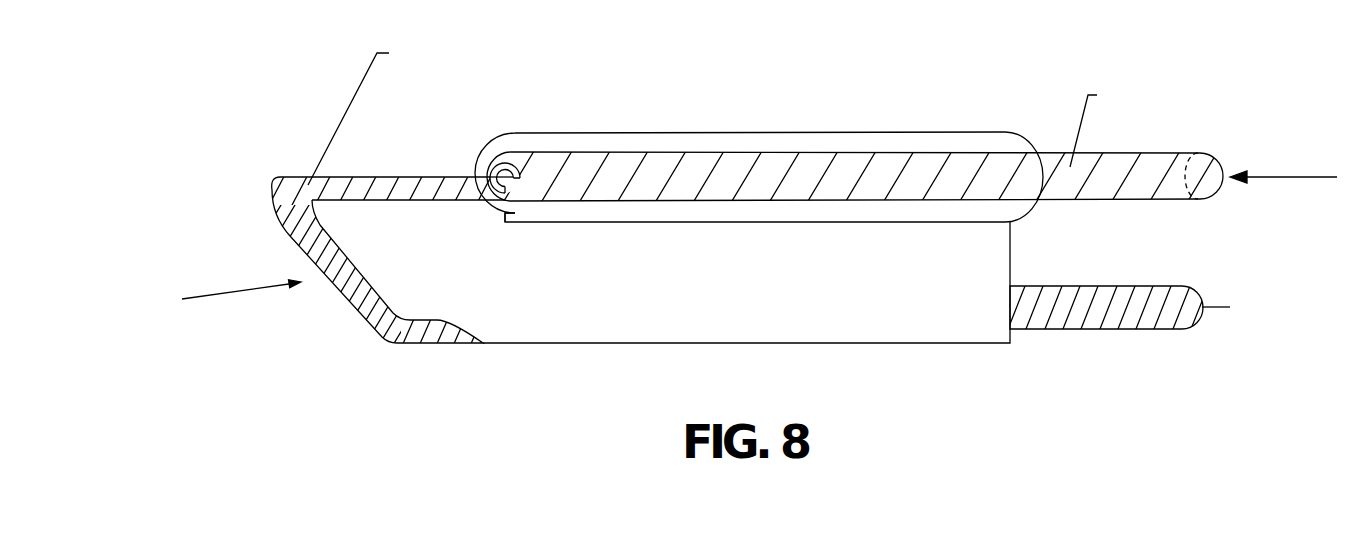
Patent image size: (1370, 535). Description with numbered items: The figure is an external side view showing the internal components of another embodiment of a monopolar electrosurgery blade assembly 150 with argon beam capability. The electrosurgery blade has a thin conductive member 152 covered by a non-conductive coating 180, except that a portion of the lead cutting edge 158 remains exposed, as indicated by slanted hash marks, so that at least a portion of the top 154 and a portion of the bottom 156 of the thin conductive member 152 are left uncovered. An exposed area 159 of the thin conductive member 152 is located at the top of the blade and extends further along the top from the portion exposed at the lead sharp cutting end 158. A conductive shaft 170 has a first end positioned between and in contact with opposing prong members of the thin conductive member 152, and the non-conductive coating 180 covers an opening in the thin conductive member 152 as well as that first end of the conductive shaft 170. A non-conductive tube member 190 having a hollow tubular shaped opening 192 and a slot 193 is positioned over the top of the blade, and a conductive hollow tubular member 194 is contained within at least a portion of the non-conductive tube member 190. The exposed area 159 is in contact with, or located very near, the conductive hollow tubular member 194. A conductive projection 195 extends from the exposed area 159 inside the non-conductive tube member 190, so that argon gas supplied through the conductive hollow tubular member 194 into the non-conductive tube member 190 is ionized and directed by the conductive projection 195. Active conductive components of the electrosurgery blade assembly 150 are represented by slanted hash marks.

The electrosurgery blade assembly 150 is at (866, 61).
The thin conductive member 152 is at (292, 226).
The top of the thin conductive member 154 is at (292, 175).
The bottom of the thin conductive member 156 is at (427, 345).
The lead cutting edge 158 is at (333, 311).
The exposed area 159 is at (357, 173).
The conductive shaft 170 is at (1128, 318).
The non-conductive coating 180 is at (780, 290).
The non-conductive tube member 190 is at (580, 143).
The hollow tubular shaped opening 192 is at (498, 148).
The slot 193 is at (503, 215).
The conductive hollow tubular member 194 is at (703, 167).
The conductive projection 195 is at (495, 178).